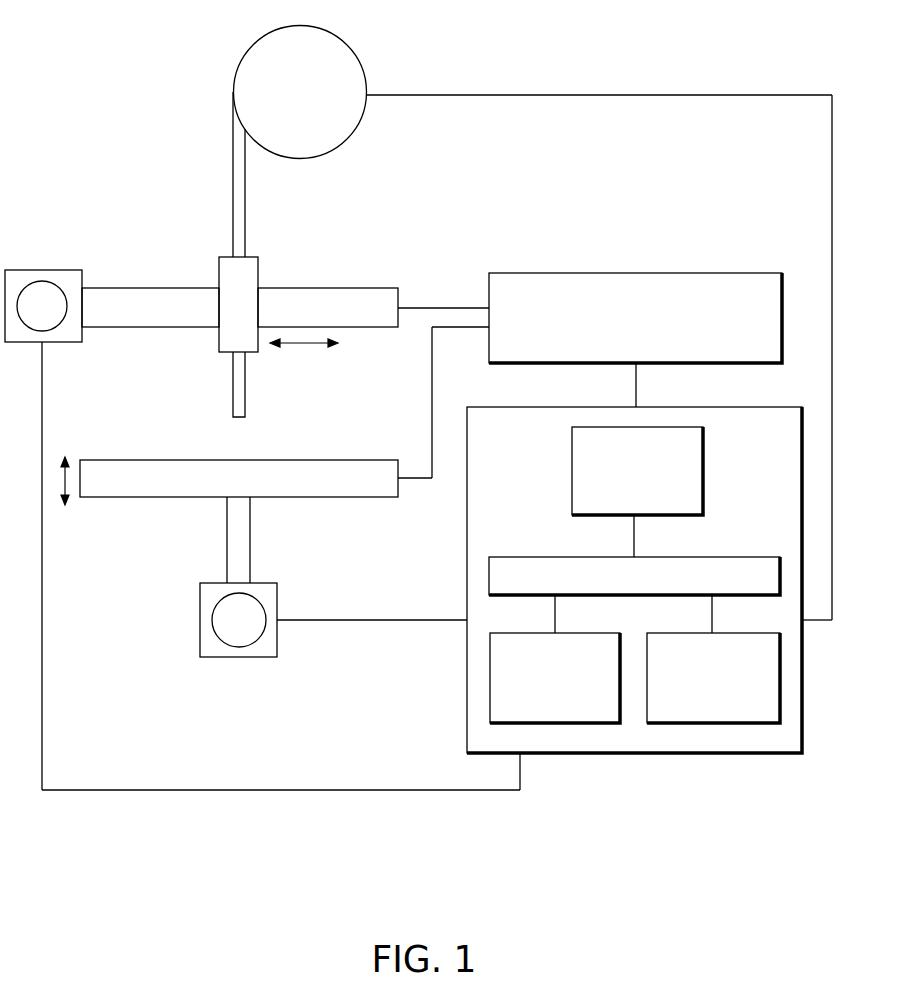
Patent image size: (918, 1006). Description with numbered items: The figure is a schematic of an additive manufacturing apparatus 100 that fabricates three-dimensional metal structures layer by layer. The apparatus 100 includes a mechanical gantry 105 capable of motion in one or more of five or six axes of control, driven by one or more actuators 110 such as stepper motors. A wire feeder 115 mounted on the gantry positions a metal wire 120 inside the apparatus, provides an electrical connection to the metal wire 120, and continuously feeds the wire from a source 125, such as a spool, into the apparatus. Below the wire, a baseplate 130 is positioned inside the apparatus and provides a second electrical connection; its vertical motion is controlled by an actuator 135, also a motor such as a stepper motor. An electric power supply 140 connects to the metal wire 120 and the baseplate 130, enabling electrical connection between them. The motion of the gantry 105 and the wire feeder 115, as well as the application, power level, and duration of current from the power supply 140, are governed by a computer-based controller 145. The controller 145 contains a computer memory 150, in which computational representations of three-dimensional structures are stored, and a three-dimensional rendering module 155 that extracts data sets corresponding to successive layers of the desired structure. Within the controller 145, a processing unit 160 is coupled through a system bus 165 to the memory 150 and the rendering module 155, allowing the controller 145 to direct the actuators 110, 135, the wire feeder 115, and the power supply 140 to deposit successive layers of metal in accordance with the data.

The apparatus 100 is at (104, 120).
The mechanical gantry 105 is at (363, 288).
The actuator 110 is at (40, 270).
The wire feeder 115 is at (258, 277).
The metal wire 120 is at (245, 378).
The source 125 is at (288, 82).
The baseplate 130 is at (127, 460).
The actuator 135 is at (200, 617).
The electric power supply 140 is at (657, 343).
The controller 145 is at (685, 758).
The computer memory 150 is at (535, 702).
The 3D rendering module 155 is at (694, 702).
The processing unit 160 is at (618, 496).
The system bus 165 is at (522, 557).